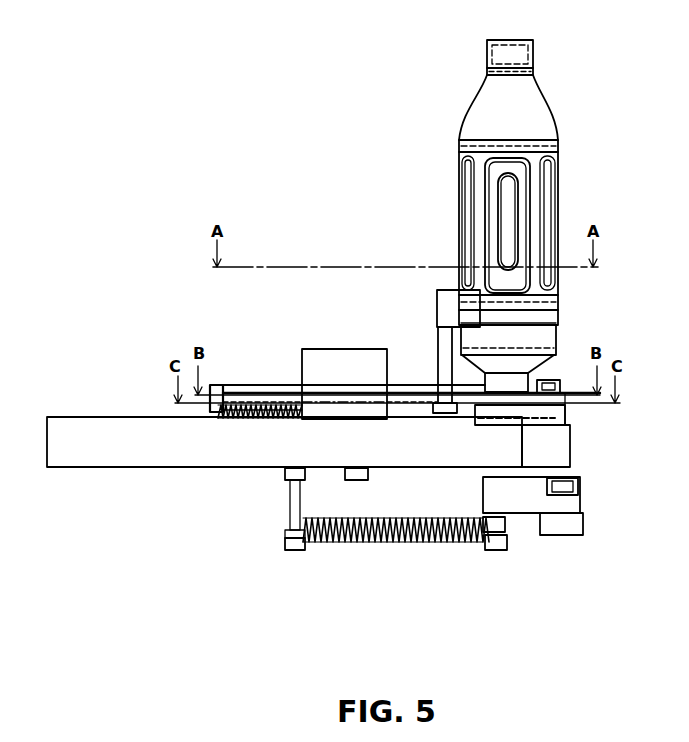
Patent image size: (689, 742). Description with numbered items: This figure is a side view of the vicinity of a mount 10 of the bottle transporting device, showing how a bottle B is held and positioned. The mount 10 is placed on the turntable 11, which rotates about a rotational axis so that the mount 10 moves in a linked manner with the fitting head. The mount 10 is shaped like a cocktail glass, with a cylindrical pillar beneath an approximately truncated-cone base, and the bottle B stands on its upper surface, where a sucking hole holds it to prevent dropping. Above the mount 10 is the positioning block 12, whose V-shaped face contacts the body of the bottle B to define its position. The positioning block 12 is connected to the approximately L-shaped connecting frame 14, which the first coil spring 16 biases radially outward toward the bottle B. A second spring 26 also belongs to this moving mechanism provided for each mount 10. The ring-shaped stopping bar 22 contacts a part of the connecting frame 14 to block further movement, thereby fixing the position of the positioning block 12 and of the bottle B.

The bottle B is at (535, 115).
The mount 10 is at (540, 357).
The turntable 11 is at (98, 440).
The positioning block 12 is at (448, 298).
The connecting frame 14 is at (442, 358).
The first coil spring 16 is at (248, 418).
The stopping bar 22 is at (523, 428).
The spring 26 is at (404, 542).